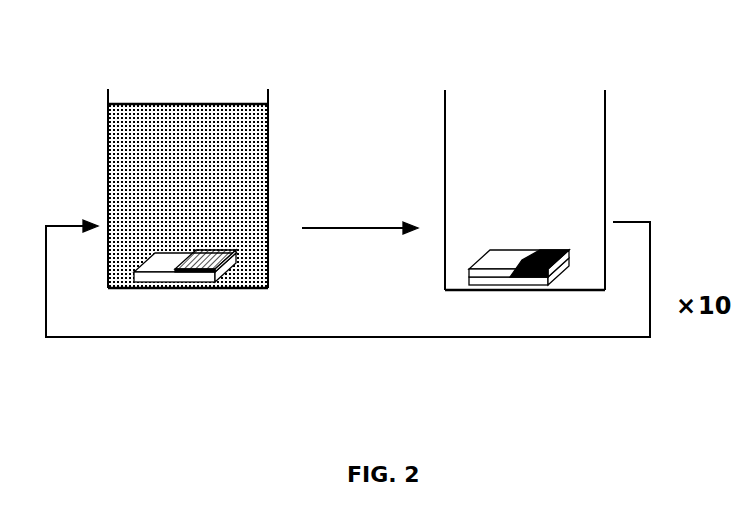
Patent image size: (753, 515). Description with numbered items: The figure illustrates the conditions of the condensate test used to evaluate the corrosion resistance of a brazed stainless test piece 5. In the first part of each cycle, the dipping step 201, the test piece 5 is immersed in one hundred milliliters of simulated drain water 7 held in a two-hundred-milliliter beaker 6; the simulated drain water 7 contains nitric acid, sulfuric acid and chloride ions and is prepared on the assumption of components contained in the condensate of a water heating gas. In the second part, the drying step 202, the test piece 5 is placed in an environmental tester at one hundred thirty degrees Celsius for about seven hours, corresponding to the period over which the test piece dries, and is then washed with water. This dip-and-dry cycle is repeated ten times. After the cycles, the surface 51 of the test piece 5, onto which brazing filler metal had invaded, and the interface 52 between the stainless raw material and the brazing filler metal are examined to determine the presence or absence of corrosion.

The dipping step 201 is at (200, 82).
The drying step 202 is at (527, 86).
The simulated drain water 7 is at (220, 132).
The 200-ml beaker 6 is at (107, 168).
The test piece 5 is at (146, 280).
The surface 51 is at (545, 262).
The interface 52 is at (487, 278).